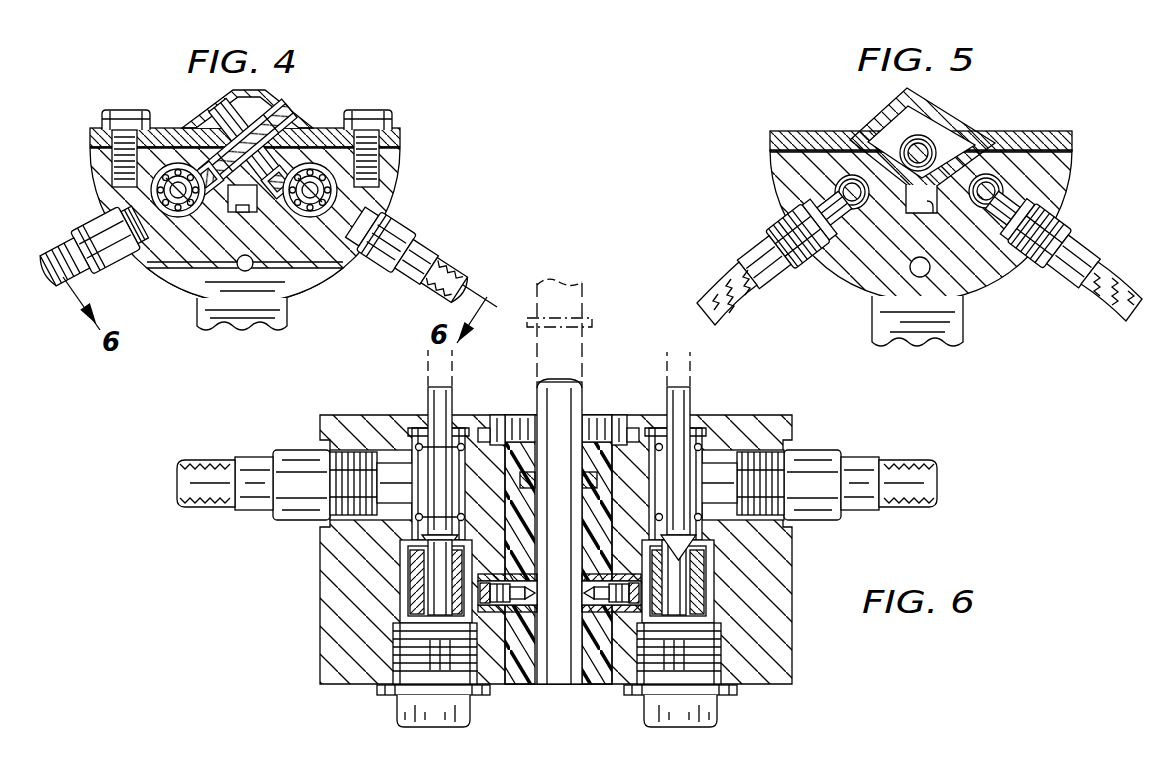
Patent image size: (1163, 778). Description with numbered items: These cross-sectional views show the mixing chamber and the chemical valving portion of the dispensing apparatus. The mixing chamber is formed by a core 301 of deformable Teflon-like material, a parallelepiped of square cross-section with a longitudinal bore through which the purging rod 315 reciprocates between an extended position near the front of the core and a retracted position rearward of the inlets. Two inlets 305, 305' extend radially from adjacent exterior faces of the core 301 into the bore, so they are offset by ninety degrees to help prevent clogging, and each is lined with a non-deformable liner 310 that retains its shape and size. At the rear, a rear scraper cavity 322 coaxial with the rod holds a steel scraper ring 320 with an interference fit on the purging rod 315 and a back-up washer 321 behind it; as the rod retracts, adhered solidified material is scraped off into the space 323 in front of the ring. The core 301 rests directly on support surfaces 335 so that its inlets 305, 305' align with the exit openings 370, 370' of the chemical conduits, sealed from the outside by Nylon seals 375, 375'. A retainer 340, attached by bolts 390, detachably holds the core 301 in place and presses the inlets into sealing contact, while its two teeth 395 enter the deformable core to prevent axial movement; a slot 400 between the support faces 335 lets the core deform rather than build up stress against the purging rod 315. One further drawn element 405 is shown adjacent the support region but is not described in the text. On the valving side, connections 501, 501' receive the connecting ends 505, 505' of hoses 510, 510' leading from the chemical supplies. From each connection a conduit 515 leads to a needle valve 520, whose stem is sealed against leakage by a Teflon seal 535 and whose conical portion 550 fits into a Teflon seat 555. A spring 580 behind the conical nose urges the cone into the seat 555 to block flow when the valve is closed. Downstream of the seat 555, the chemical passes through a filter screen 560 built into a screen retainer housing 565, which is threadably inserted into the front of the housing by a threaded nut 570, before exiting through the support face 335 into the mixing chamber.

In FIG. 4, the core 301 is at (296, 243).
In FIG. 5, the core 301 is at (912, 128).
In FIG. 4, the inlet 305 is at (186, 138).
In FIG. 6, the inlet 305 is at (529, 593).
In FIG. 4, the inlet 305' is at (306, 136).
In FIG. 6, the inlet 305' is at (601, 652).
In FIG. 6, the non-deformable liner 310 is at (500, 676).
In FIG. 5, the purging rod 315 is at (905, 104).
In FIG. 6, the scraper ring 320 is at (664, 432).
In FIG. 6, the back-up washer 321 is at (588, 412).
In FIG. 6, the rear scraper cavity 322 is at (522, 415).
In FIG. 6, the space 323 is at (497, 404).
In FIG. 5, the support surfaces 335 is at (868, 128).
In FIG. 4, the retainer 340 is at (225, 100).
In FIG. 5, the retainer 340 is at (925, 100).
In FIG. 6, the exit opening 370 is at (512, 582).
In FIG. 6, the exit opening 370' is at (636, 581).
In FIG. 6, the seal 375 is at (530, 575).
In FIG. 6, the seal 375' is at (636, 559).
In FIG. 4, the bolts 390 is at (128, 112).
In FIG. 4, the teeth 395 is at (240, 135).
In FIG. 4, the slot 400 is at (196, 297).
In FIG. 5, the slot 400 is at (990, 275).
In FIG. 5, the mounting plate 405 is at (770, 158).
In FIG. 6, the connection 501 is at (357, 449).
In FIG. 6, the connection 501' is at (792, 459).
In FIG. 4, the connecting end 505 is at (92, 252).
In FIG. 5, the connecting end 505 is at (778, 253).
In FIG. 6, the connecting end 505 is at (326, 464).
In FIG. 4, the connecting end 505' is at (411, 250).
In FIG. 5, the connecting end 505' is at (1062, 251).
In FIG. 6, the connecting end 505' is at (816, 474).
In FIG. 6, the hose 510 is at (200, 467).
In FIG. 6, the hose 510' is at (951, 479).
In FIG. 6, the conduit 515 is at (390, 440).
In FIG. 6, the needle valve 520 is at (428, 386).
In FIG. 6, the seal 535 is at (418, 445).
In FIG. 6, the conical portion 550 is at (452, 542).
In FIG. 6, the seat 555 is at (405, 557).
In FIG. 6, the filter screen 560 is at (393, 658).
In FIG. 6, the screen retainer housing 565 is at (400, 593).
In FIG. 6, the threaded nut 570 is at (423, 672).
In FIG. 6, the spring 580 is at (417, 515).